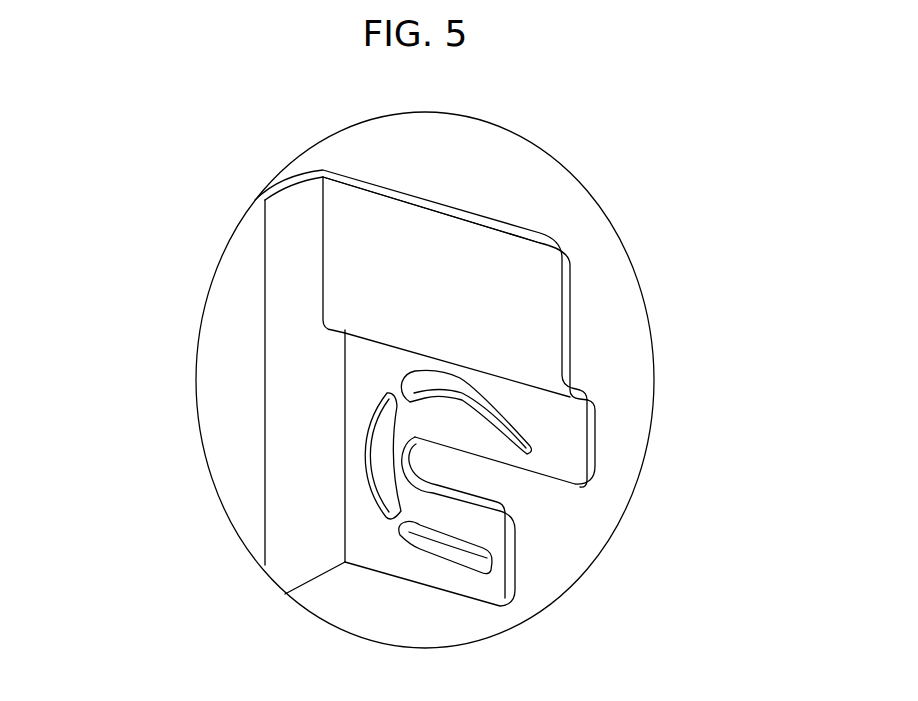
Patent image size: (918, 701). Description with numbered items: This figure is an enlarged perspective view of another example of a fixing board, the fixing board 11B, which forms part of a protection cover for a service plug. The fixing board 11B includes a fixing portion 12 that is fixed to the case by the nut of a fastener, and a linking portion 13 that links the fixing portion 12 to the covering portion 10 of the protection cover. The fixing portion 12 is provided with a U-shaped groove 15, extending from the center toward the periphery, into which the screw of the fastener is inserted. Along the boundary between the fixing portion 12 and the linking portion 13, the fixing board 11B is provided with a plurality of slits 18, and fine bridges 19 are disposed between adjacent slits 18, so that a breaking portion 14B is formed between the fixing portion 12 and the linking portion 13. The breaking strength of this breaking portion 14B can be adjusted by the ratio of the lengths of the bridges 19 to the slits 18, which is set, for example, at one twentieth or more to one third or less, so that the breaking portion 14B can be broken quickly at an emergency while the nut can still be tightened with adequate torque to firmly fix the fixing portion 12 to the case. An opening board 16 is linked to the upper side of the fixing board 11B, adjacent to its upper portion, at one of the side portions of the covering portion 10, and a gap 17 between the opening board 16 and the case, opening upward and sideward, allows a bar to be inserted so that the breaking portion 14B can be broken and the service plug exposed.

The covering portion 10 is at (223, 318).
The fixing board 11B is at (732, 298).
The fixing portion 12 is at (472, 433).
The linking portion 13 is at (383, 362).
The breaking portion 14B is at (123, 363).
The U-shaped groove 15 is at (503, 492).
The opening board 16 is at (423, 237).
The gap 17 is at (587, 285).
The slits 18 is at (368, 457).
The bridges 19 is at (400, 397).